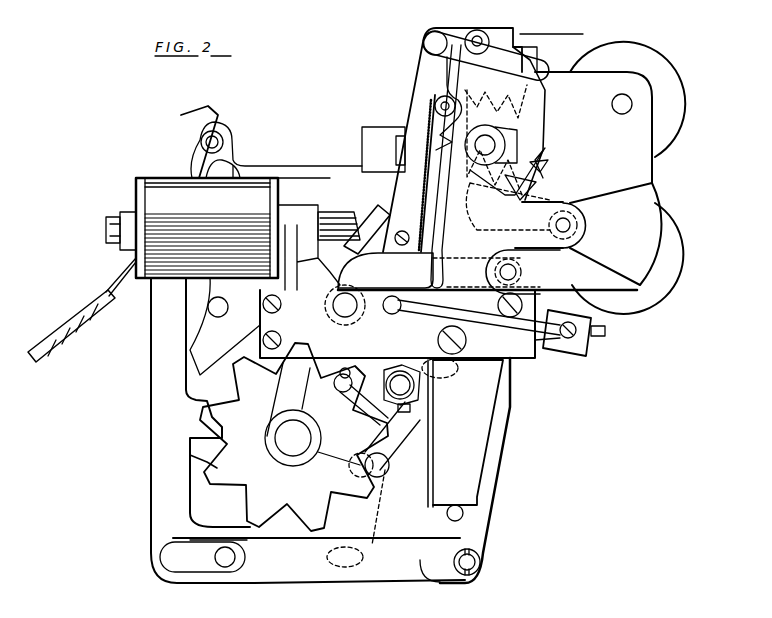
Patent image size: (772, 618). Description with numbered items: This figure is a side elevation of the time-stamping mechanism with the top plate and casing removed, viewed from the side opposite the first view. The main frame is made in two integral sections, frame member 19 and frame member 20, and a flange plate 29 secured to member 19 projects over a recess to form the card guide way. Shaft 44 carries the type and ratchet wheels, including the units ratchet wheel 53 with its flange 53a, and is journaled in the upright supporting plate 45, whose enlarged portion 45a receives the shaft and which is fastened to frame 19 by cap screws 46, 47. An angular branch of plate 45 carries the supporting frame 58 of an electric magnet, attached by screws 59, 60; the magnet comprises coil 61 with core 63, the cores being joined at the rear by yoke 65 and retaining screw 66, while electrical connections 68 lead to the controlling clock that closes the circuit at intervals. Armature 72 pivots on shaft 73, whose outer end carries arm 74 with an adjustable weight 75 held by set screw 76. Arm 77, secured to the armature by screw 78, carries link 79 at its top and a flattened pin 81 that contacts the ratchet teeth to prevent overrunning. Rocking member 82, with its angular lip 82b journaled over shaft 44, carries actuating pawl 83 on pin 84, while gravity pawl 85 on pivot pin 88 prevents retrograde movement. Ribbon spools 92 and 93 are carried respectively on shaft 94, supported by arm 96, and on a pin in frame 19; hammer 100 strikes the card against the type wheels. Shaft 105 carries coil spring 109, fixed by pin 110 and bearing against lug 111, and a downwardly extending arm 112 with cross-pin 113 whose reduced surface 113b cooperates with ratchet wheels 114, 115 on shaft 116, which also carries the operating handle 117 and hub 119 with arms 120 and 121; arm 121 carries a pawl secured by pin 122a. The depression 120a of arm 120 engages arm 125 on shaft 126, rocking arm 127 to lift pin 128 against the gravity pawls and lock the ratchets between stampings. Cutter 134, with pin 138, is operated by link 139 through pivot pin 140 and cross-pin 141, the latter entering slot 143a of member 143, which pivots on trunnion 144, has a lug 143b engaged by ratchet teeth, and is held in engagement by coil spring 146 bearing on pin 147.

The frame member 19 is at (542, 288).
The frame member 20 is at (514, 450).
The flange plate 29 is at (443, 225).
The shaft 44 is at (498, 141).
The upright supporting member 45 is at (448, 286).
The enlarged portion 45a is at (514, 215).
The cap screw 46 is at (498, 304).
The cap screw 47 is at (443, 338).
The ratchet wheel 53 is at (536, 183).
The flange 53a is at (548, 166).
The supporting frame 58 is at (310, 225).
The screw 59 is at (281, 304).
The screw 60 is at (281, 342).
The coil 61 is at (207, 228).
The core 63 is at (325, 220).
The yoke 65 is at (128, 212).
The retaining screw 66 is at (106, 226).
The electrical connections 68 is at (66, 336).
The armature 72 is at (378, 225).
The arbor or shaft 73 is at (390, 312).
The arm 74 is at (536, 345).
The weight 75 is at (575, 352).
The set screw 76 is at (576, 334).
The arm 77 is at (452, 140).
The screw 78 is at (402, 230).
The link 79 is at (432, 54).
The pin 81 is at (436, 106).
The rocking member 82 is at (496, 132).
The angular lip 82b is at (540, 152).
The actuating pawl 83 is at (542, 95).
The pin 84 is at (482, 40).
The gravity pawl 85 is at (615, 234).
The pivot pin 88 is at (570, 228).
The spool 92 is at (627, 99).
The spool 93 is at (672, 248).
The shaft 94 is at (632, 106).
The arm 96 is at (580, 46).
The hammer 100 is at (368, 132).
The shaft 105 is at (420, 402).
The coil spring 109 is at (414, 388).
The pin 110 is at (412, 412).
The pin or lug 111 is at (450, 369).
The arm 112 is at (384, 478).
The cross-pin 113 is at (345, 557).
The reduced portion 113b is at (395, 513).
The ratchet wheel 114 is at (310, 560).
The ratchet wheel 115 is at (294, 437).
The shaft 116 is at (286, 441).
The main operating handle 117 is at (205, 118).
The hub portion 119 is at (310, 455).
The arm 120 is at (338, 370).
The depression 120a is at (345, 378).
The arm 121 is at (226, 317).
The pin 122a is at (218, 315).
The arm 125 is at (300, 366).
The shaft 126 is at (333, 310).
The arm 127 is at (385, 271).
The pin 128 is at (516, 271).
The cutter 134 is at (470, 525).
The pin 138 is at (463, 513).
The link 139 is at (319, 560).
The pivot pin 140 is at (480, 564).
The cross-pin 141 is at (226, 562).
The member 143 is at (200, 430).
The slot 143a is at (190, 560).
The lug 143b is at (196, 434).
The pin or trunnion 144 is at (200, 172).
The coil spring 146 is at (201, 142).
The pin 147 is at (218, 142).